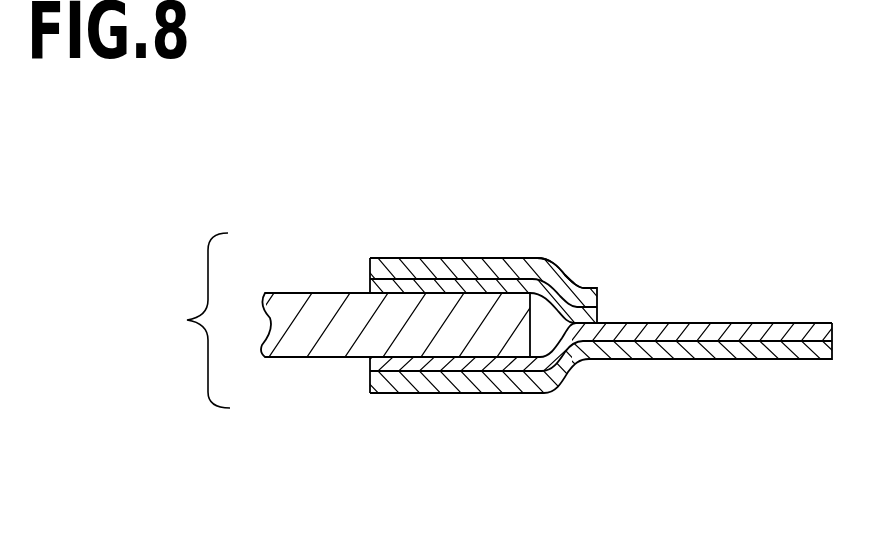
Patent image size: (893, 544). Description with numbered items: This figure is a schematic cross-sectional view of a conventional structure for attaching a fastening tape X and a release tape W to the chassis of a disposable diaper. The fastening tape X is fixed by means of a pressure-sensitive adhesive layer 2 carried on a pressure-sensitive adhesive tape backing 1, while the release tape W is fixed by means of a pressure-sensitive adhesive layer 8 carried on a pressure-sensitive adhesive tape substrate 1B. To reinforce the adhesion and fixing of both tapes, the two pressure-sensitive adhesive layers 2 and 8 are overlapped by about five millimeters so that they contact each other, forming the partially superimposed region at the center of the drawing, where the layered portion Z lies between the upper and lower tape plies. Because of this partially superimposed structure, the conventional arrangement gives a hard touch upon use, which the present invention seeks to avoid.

The pressure-sensitive adhesive tape backing 1 is at (765, 353).
The pressure-sensitive adhesive layer 2 is at (767, 330).
The pressure-sensitive adhesive tape substrate 1B is at (560, 268).
The pressure-sensitive adhesive layer 8 is at (598, 315).
The release tape W is at (492, 244).
The fastening tape X is at (458, 407).
The terminal member Z is at (290, 342).